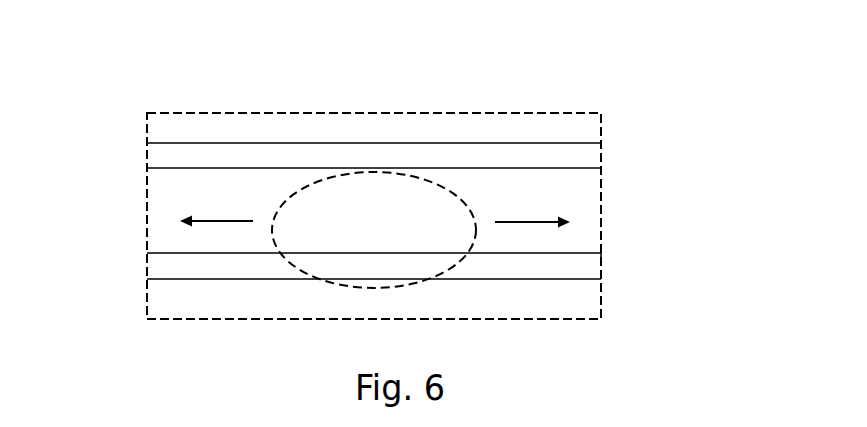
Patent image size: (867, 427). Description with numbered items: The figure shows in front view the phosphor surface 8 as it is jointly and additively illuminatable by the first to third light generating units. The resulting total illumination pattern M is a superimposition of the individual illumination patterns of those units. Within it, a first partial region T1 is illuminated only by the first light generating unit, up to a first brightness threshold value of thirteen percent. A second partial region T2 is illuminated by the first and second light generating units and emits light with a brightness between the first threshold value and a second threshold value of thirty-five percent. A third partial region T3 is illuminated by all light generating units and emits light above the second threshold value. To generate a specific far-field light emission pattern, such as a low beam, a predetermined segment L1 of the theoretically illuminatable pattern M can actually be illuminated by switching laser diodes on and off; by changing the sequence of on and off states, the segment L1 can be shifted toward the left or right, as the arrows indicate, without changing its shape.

The total illumination pattern M is at (163, 192).
The first partial region T1 is at (548, 123).
The second partial region T2 is at (568, 161).
The third partial region T3 is at (576, 202).
The segment L1 is at (371, 172).
The phosphor surface 8 is at (601, 265).